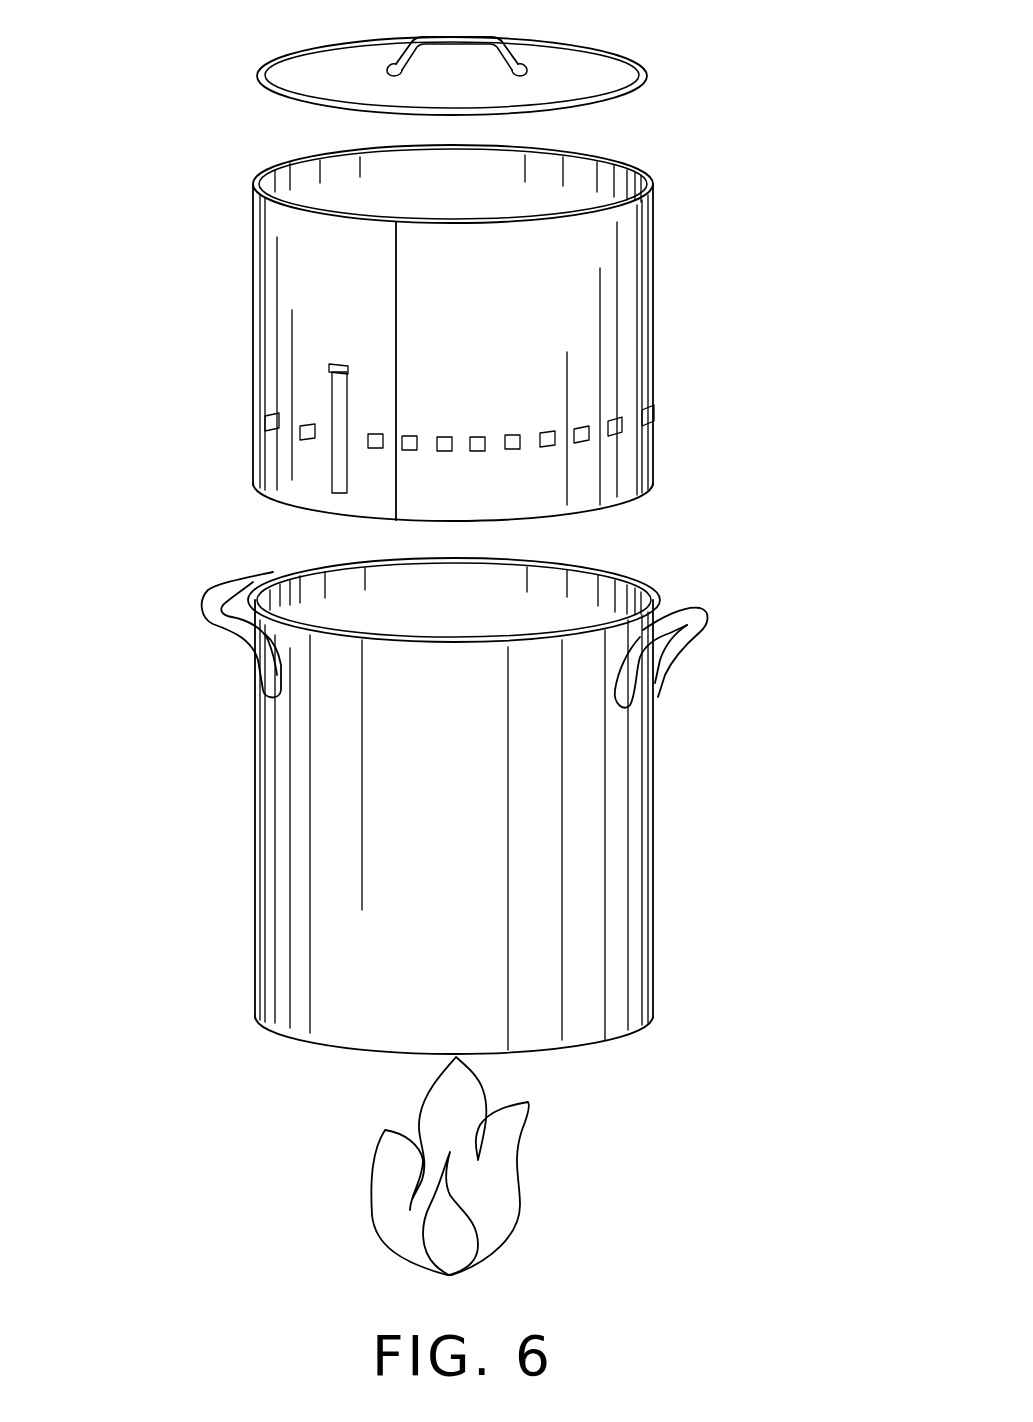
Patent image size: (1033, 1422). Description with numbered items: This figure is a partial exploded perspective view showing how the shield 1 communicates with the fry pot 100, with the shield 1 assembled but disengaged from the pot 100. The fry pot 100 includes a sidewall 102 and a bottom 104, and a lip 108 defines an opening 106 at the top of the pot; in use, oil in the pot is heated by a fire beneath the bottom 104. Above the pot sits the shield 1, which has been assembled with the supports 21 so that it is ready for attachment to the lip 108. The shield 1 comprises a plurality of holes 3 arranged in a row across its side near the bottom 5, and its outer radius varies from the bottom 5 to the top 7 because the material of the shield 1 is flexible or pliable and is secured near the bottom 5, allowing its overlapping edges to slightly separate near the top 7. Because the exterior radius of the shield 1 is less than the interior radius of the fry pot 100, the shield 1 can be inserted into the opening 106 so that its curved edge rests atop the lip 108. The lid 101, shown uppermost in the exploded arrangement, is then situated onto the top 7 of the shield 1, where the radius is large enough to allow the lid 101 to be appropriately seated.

The fry pot 100 is at (451, 807).
The lid 101 is at (337, 47).
The sidewall 102 is at (478, 920).
The bottom 104 is at (618, 1043).
The opening 106 is at (268, 533).
The lip 108 is at (197, 592).
The shield 1 is at (436, 339).
The top 7 is at (268, 173).
The holes 3 is at (447, 452).
The bottom 5 is at (530, 522).
The supports 21 is at (343, 443).